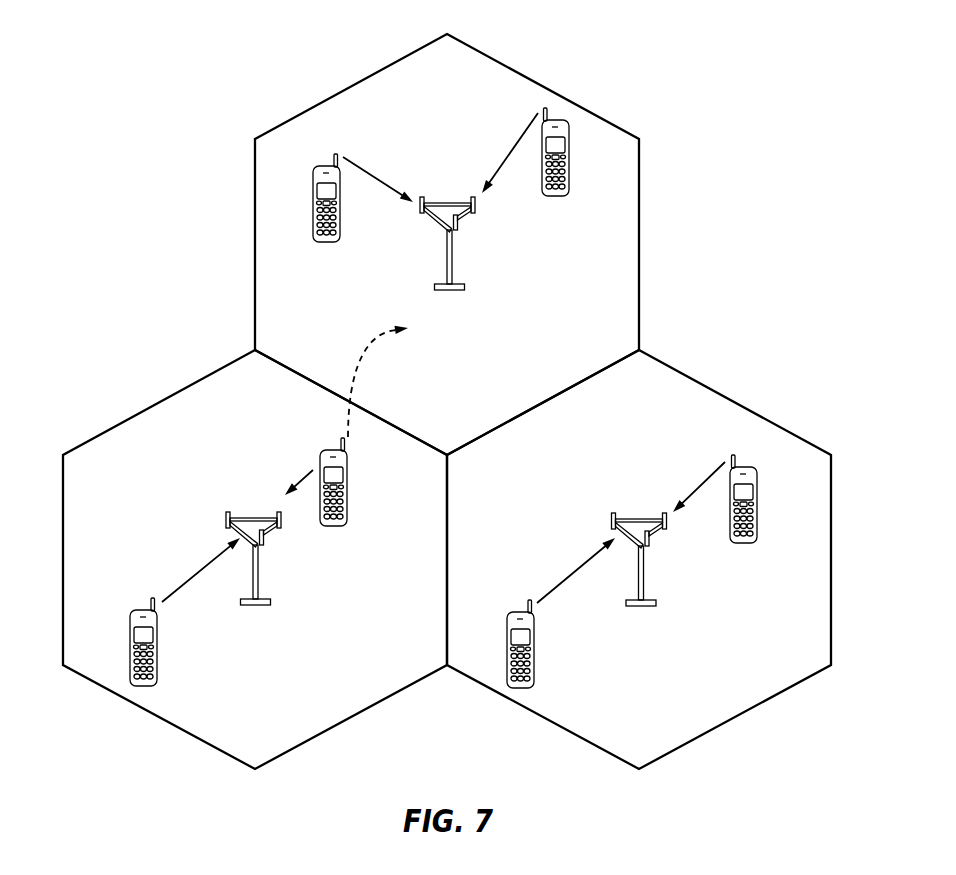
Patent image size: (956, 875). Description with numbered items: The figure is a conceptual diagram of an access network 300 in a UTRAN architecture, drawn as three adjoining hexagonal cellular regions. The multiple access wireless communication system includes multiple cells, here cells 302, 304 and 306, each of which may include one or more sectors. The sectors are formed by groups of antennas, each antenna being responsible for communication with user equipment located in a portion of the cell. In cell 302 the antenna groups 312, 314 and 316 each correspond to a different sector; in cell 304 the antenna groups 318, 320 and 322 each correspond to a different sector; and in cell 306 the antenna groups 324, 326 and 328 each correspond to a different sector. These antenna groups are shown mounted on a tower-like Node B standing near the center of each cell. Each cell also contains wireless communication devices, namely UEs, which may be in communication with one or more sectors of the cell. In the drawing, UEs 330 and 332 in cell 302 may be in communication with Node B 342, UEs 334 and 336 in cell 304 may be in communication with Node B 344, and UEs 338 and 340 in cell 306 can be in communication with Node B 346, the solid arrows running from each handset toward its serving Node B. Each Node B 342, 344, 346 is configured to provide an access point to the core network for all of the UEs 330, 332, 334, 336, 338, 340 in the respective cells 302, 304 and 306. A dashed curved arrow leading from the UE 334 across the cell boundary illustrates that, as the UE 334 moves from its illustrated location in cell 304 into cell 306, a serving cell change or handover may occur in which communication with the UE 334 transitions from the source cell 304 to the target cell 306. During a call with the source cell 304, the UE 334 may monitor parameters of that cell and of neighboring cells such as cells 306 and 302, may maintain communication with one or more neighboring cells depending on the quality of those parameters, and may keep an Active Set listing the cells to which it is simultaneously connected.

The access network 300 is at (447, 387).
The cell 302 is at (733, 398).
The cell 304 is at (133, 408).
The cell 306 is at (526, 75).
The antenna group 312 is at (612, 515).
The antenna group 314 is at (650, 545).
The antenna group 316 is at (667, 525).
The antenna group 318 is at (260, 542).
The antenna group 320 is at (277, 522).
The antenna group 322 is at (223, 507).
The antenna group 324 is at (420, 217).
The antenna group 326 is at (458, 233).
The antenna group 328 is at (473, 212).
The UE 330 is at (757, 490).
The UE 332 is at (506, 633).
The UE 334 is at (348, 470).
The UE 336 is at (127, 623).
The UE 338 is at (327, 242).
The UE 340 is at (560, 197).
The Node B 342 is at (638, 537).
The Node B 344 is at (250, 534).
The Node B 346 is at (447, 223).